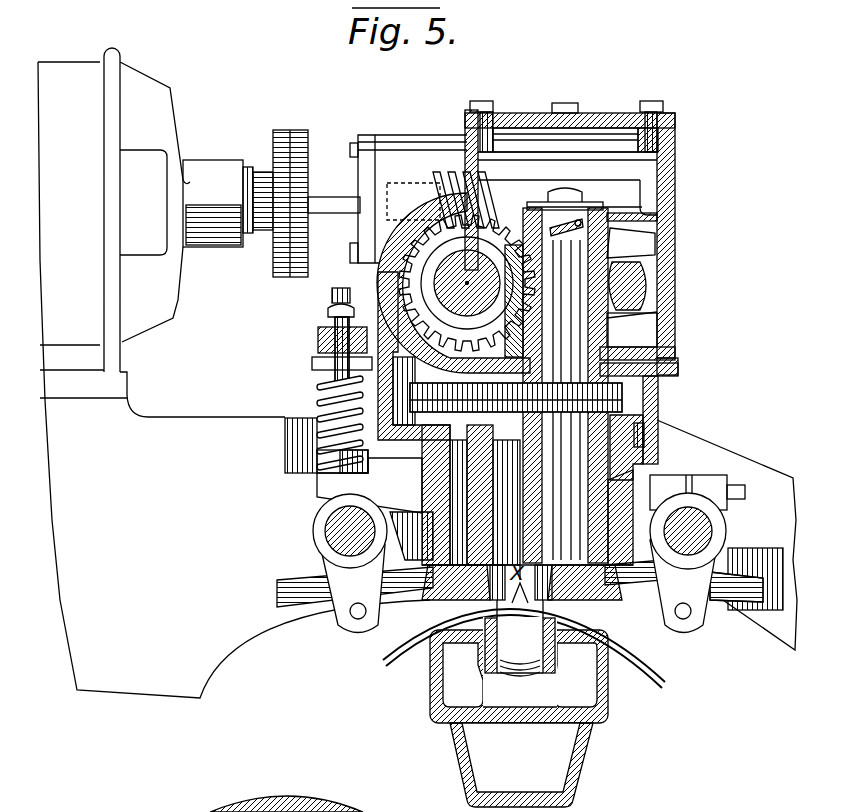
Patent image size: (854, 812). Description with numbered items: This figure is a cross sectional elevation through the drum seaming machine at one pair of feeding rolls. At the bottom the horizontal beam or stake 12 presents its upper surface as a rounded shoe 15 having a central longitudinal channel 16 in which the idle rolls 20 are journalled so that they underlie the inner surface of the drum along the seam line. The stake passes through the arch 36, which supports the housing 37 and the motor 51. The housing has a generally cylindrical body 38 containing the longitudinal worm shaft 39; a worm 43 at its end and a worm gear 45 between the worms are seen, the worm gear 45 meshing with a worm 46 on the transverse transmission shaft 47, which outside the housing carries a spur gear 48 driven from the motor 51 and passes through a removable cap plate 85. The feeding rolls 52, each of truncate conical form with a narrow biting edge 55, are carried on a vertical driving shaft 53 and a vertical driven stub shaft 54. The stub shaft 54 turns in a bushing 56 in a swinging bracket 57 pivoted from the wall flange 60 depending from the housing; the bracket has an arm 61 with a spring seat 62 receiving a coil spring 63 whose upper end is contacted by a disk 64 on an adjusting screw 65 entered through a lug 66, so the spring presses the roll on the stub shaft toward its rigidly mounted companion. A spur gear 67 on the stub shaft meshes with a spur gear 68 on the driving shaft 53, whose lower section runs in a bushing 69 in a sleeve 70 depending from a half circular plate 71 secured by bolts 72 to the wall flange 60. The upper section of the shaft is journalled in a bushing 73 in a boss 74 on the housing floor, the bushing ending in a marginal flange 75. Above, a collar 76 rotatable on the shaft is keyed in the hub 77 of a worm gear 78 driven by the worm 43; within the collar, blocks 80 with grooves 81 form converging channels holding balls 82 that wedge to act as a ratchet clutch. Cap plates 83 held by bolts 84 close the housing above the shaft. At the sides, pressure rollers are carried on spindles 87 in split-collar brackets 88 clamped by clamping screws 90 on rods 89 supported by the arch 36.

The beam or stake 12 is at (582, 764).
The rounded shoe 15 is at (618, 633).
The channel 16 is at (540, 690).
The idle rolls 20 is at (523, 650).
The arch 36 is at (753, 473).
The housing 37 is at (682, 274).
The body 38 is at (333, 300).
The worm shaft 39 is at (492, 325).
The worm 43 is at (433, 292).
The worm gear 45 is at (490, 243).
The worm 46 is at (478, 192).
The transmission shaft 47 is at (336, 195).
The spur gear 48 is at (306, 150).
The motor 51 is at (160, 168).
The feeding rolls 52 is at (612, 600).
The driving shaft 53 is at (618, 521).
The driven stub shaft 54 is at (463, 486).
The biting edge 55 is at (632, 598).
The bushing 56 is at (390, 552).
The swinging bracket 57 is at (440, 507).
The wall flange 60 is at (660, 413).
The arm 61 is at (340, 492).
The spring seat 62 is at (330, 463).
The coil spring 63 is at (322, 395).
The disk 64 is at (318, 360).
The adjusting screw 65 is at (330, 312).
The lug 66 is at (320, 335).
The spur gear 67 is at (445, 385).
The spur gear 68 is at (625, 398).
The bushing 69 is at (607, 507).
The sleeve 70 is at (598, 545).
The half circular plate 71 is at (658, 447).
The bolts 72 is at (660, 432).
The bushing 73 is at (602, 330).
The boss 74 is at (657, 315).
The marginal flange 75 is at (617, 265).
The collar 76 is at (612, 240).
The hub 77 is at (640, 212).
The worm gear 78 is at (630, 292).
The blocks 80 is at (570, 217).
The grooves 81 is at (563, 256).
The balls 82 is at (264, 801).
The cap plates 83 is at (608, 112).
The bolts 84 is at (660, 120).
The cap plate 85 is at (372, 180).
The spindle 87 is at (330, 620).
The bracket 88 is at (717, 545).
The rods 89 is at (328, 536).
The clamping screws 90 is at (745, 498).